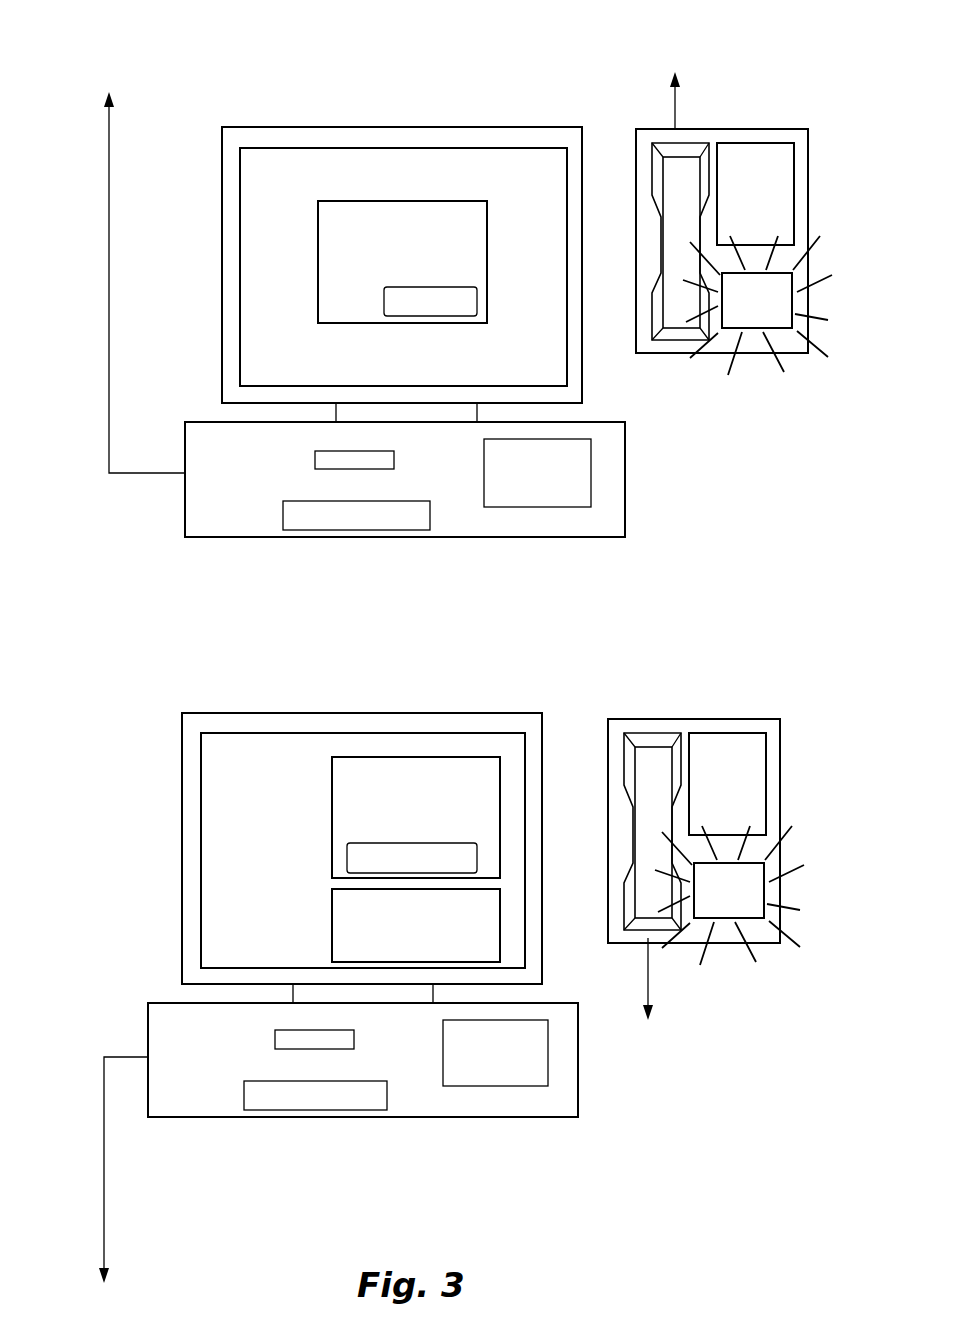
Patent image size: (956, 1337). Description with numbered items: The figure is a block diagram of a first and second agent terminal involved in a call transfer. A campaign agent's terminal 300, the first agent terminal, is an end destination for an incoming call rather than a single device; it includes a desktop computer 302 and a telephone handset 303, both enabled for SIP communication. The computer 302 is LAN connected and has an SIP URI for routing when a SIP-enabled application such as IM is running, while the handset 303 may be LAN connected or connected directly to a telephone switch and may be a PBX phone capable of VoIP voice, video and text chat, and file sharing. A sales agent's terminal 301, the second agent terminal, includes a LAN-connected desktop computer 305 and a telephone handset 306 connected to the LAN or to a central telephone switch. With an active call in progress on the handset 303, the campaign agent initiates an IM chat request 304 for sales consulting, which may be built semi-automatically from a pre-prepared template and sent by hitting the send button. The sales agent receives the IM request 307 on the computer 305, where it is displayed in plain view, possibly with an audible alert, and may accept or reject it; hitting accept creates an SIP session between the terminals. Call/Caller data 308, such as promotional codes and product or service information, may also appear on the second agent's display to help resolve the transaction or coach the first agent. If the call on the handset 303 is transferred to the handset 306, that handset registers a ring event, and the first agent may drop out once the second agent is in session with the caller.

The first agent terminal 300 is at (668, 430).
The second agent terminal 301 is at (645, 1045).
The desktop computer 302 is at (220, 280).
The telephone handset 303 is at (663, 352).
The IM chat request 304 is at (318, 250).
The desktop computer 305 is at (182, 798).
The telephone handset 306 is at (693, 718).
The IM request 307 is at (332, 816).
The call/caller data 308 is at (332, 930).